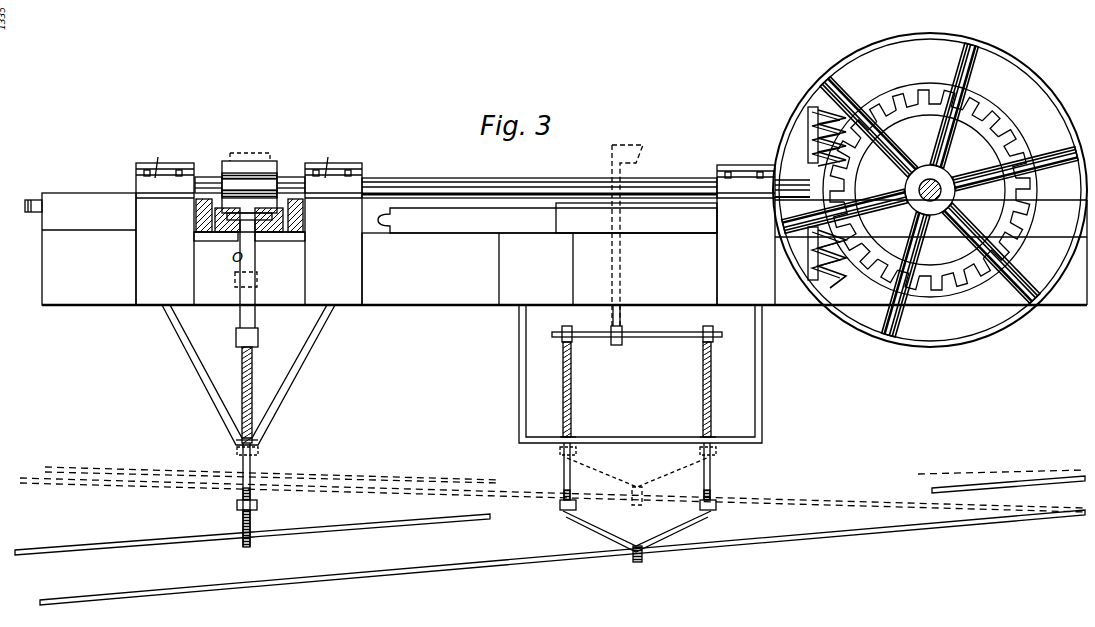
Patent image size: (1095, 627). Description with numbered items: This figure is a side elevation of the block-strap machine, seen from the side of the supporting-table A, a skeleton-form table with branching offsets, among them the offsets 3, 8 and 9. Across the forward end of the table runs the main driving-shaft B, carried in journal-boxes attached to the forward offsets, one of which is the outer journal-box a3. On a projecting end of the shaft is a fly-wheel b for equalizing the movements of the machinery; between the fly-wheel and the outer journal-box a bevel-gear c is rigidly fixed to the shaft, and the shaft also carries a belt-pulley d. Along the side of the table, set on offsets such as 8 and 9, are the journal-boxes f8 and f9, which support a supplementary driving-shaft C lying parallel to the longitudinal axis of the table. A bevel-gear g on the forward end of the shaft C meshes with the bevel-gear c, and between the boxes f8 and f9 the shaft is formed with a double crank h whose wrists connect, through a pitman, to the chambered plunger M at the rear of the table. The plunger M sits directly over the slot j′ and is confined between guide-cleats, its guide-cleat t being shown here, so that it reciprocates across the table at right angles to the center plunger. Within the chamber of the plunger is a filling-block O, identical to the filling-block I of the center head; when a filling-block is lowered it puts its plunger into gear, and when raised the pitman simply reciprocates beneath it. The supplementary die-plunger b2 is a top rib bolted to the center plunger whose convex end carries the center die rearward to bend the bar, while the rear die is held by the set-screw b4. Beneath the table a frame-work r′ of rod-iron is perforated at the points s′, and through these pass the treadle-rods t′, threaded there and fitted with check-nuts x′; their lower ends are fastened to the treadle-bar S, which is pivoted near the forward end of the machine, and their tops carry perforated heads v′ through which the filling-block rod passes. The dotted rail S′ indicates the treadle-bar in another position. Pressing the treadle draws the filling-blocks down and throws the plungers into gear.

The offset 3 is at (746, 235).
The offset 8 is at (333, 234).
The offset 9 is at (165, 234).
The supporting-table A is at (564, 252).
The main driving-shaft B is at (930, 188).
The fly-wheel b is at (930, 188).
The supplementary die-plunger b2 is at (547, 220).
The set-screw b4 is at (26, 202).
The supplementary driving-shaft C is at (586, 186).
The bevel-gear c is at (930, 190).
The belt-pulley d is at (930, 192).
The bevel-gear g is at (824, 197).
The double crank h is at (250, 179).
The journal-box f8 is at (328, 160).
The journal-box f9 is at (158, 160).
The filling-block O is at (249, 228).
The chambered plunger M is at (224, 236).
The slot j′ is at (258, 236).
The collar i′ is at (251, 279).
The guide-cleat t is at (636, 218).
The filling-block I is at (622, 360).
The journal-box a3 is at (740, 176).
The check-nut x′ is at (248, 426).
The head v′ is at (247, 337).
The treadle-rod t′ is at (237, 395).
The frame-work r′ is at (260, 393).
The perforation s′ is at (254, 435).
The treadle-bar S is at (550, 511).
The rail S′ is at (552, 489).